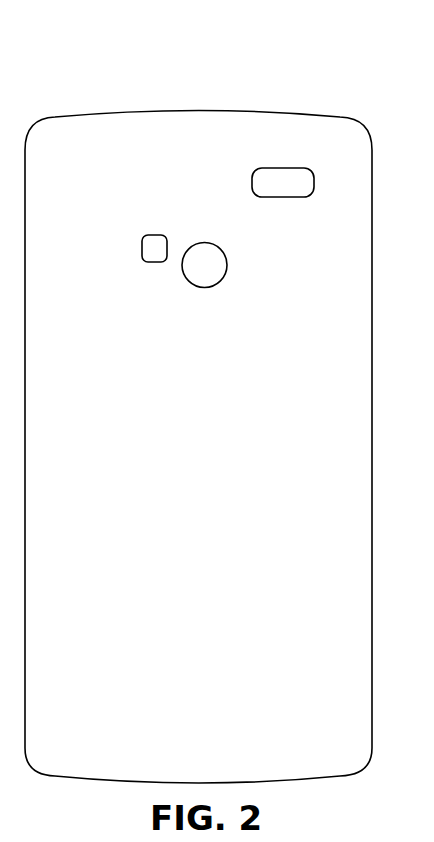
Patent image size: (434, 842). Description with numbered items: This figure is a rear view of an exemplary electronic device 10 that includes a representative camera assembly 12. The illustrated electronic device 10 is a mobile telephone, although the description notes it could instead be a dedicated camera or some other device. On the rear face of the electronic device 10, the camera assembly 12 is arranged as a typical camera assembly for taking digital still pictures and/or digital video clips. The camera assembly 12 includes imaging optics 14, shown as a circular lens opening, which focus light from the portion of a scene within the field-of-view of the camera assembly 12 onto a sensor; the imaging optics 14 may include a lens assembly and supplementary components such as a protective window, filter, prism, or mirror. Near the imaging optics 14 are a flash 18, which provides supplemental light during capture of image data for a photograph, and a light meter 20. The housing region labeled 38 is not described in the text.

The electronic device 10 is at (139, 85).
The camera assembly 12 is at (145, 210).
The imaging optics 14 is at (203, 254).
The flash 18 is at (262, 182).
The light meter 20 is at (152, 245).
The housing rear face 38 is at (61, 740).